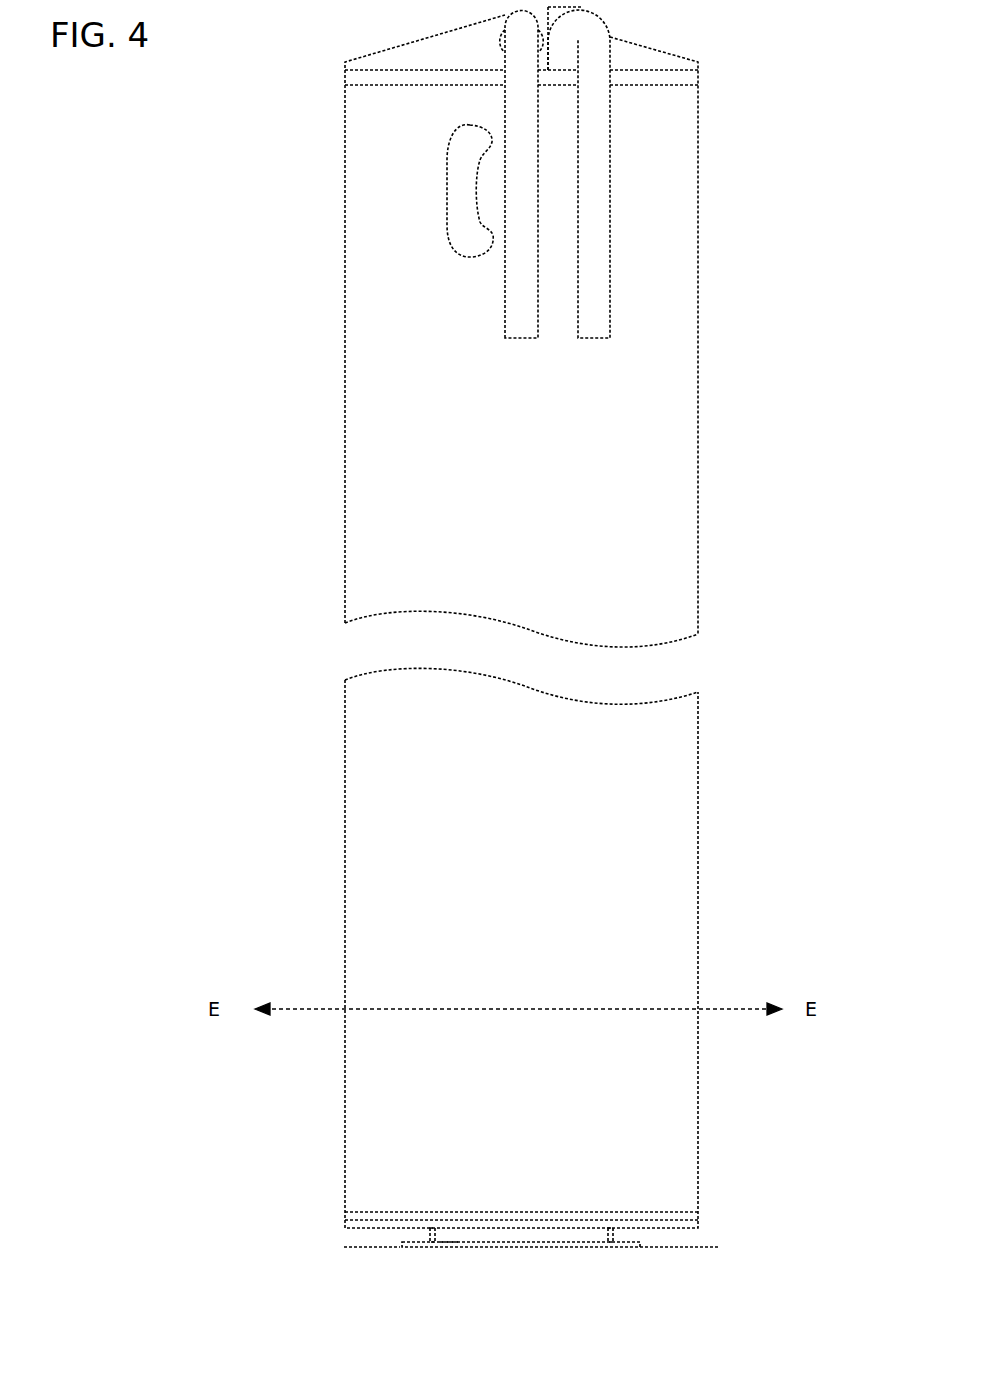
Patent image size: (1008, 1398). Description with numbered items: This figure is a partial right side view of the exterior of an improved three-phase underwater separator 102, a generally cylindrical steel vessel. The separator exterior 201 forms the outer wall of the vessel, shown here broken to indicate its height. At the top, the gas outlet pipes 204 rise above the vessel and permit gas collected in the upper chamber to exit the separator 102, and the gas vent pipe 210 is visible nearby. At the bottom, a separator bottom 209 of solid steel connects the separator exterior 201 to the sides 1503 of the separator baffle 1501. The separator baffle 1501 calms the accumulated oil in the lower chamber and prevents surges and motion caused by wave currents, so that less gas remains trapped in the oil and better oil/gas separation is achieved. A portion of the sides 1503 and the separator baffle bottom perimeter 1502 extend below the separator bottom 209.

The separator 102 is at (783, 340).
The separator exterior 201 is at (697, 1108).
The gas outlet pipes 204 is at (523, 197).
The separator bottom 209 is at (690, 1223).
The gas vent pipe 210 is at (463, 192).
The separator baffle 1501 is at (453, 1238).
The separator baffle bottom perimeter 1502 is at (645, 1244).
The sides 1503 is at (423, 1235).